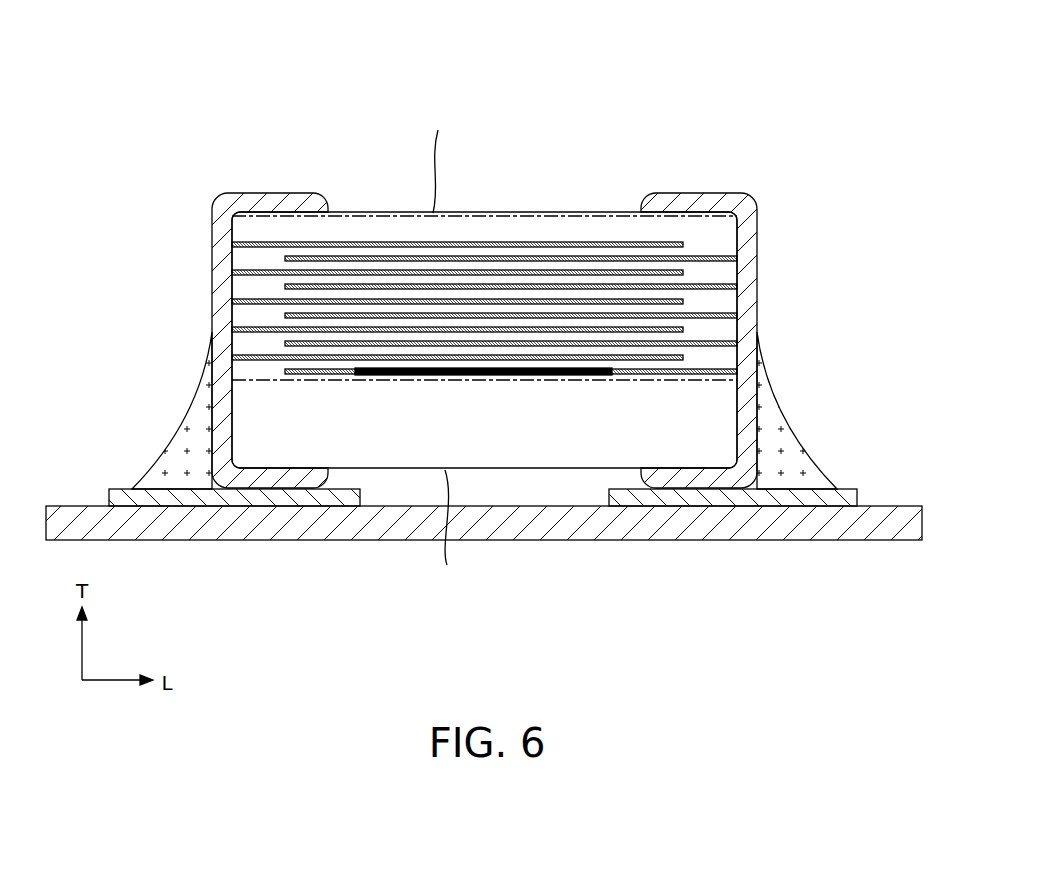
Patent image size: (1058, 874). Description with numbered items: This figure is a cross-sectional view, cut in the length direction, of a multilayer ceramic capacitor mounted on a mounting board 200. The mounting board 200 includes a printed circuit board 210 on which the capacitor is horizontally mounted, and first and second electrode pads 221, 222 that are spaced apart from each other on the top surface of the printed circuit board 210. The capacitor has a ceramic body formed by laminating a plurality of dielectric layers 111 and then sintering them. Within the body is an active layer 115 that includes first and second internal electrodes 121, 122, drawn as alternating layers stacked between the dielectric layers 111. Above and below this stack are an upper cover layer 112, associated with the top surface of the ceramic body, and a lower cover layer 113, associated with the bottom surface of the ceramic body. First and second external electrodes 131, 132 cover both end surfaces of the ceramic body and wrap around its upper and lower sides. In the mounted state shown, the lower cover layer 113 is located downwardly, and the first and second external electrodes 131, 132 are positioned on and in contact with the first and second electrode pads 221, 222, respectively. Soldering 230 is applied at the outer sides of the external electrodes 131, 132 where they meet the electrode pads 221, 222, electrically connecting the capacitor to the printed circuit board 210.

The mounting board 200 is at (503, 45).
The dielectric layer 111 is at (647, 320).
The upper cover layer 112 is at (517, 220).
The lower cover layer 113 is at (515, 452).
The active layer 115 is at (687, 293).
The first internal electrode 121 is at (260, 295).
The second internal electrode 122 is at (290, 308).
The first external electrode 131 is at (270, 200).
The second external electrode 132 is at (697, 203).
The printed circuit board 210 is at (823, 542).
The first electrode pad 221 is at (123, 496).
The second electrode pad 222 is at (843, 496).
The soldering 230 is at (187, 457).